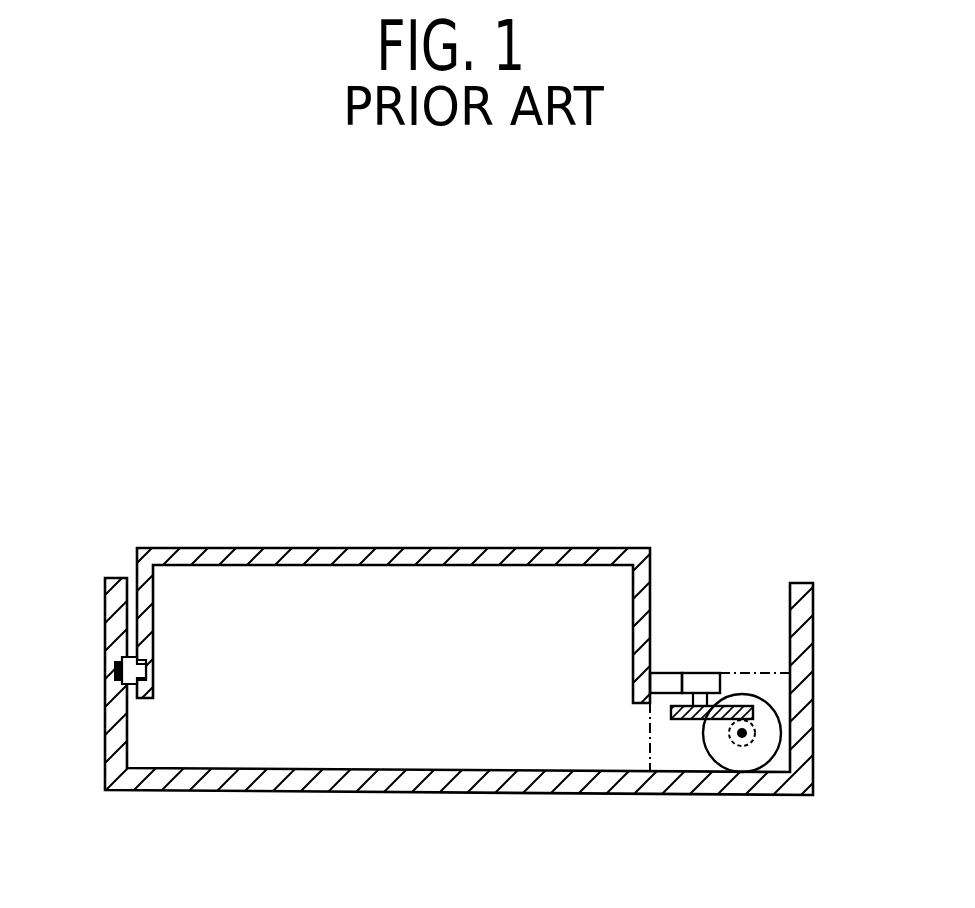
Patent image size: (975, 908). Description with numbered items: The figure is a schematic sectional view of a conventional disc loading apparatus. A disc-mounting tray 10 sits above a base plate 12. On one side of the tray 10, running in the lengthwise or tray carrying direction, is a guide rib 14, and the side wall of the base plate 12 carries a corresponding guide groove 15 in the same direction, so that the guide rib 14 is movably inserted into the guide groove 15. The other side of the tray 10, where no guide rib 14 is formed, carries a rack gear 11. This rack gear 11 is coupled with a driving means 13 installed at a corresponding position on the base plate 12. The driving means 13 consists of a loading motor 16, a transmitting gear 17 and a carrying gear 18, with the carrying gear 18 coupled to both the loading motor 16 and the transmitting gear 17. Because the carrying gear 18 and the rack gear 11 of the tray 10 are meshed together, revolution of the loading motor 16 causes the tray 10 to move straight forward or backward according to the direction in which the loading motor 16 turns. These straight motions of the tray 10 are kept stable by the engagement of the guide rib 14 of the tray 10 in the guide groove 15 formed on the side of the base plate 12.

The disc-mounting tray 10 is at (342, 550).
The rack gear 11 is at (667, 682).
The base plate 12 is at (430, 776).
The driving means 13 is at (753, 672).
The guide rib 14 is at (124, 656).
The guide groove 15 is at (123, 686).
The loading motor 16 is at (770, 735).
The transmitting gear 17 is at (682, 722).
The carrying gear 18 is at (700, 682).